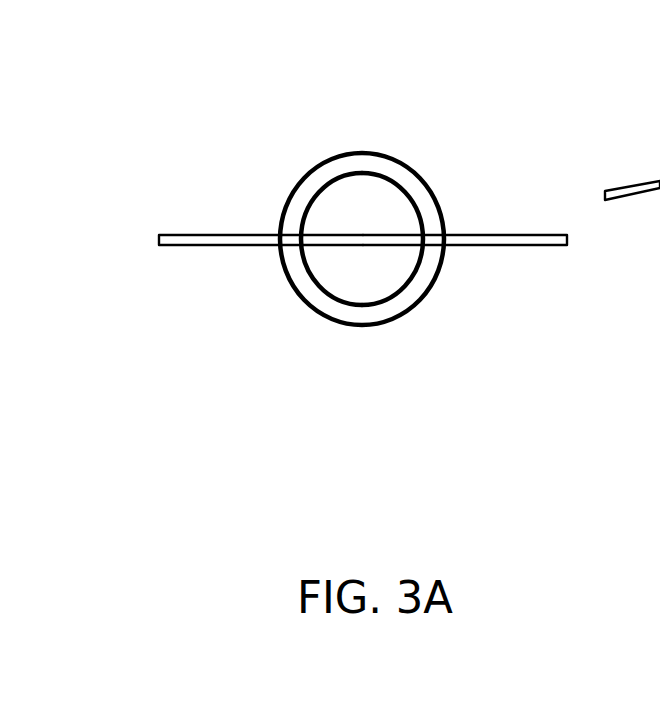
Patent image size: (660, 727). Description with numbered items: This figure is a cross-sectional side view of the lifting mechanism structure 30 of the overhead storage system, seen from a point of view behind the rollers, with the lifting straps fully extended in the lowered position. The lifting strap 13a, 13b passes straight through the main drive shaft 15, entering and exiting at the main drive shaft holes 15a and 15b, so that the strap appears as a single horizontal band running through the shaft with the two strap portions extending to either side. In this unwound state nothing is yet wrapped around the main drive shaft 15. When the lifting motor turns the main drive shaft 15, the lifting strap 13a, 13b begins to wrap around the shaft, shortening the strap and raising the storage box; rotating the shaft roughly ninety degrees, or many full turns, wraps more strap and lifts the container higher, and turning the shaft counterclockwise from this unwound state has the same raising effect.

The lifting mechanism structure 30 is at (206, 326).
The lifting strap 13a is at (216, 239).
The lifting strap 13b is at (523, 238).
The main drive shaft 15 is at (363, 315).
The main drive shaft hole 15a is at (297, 241).
The main drive shaft hole 15b is at (425, 239).